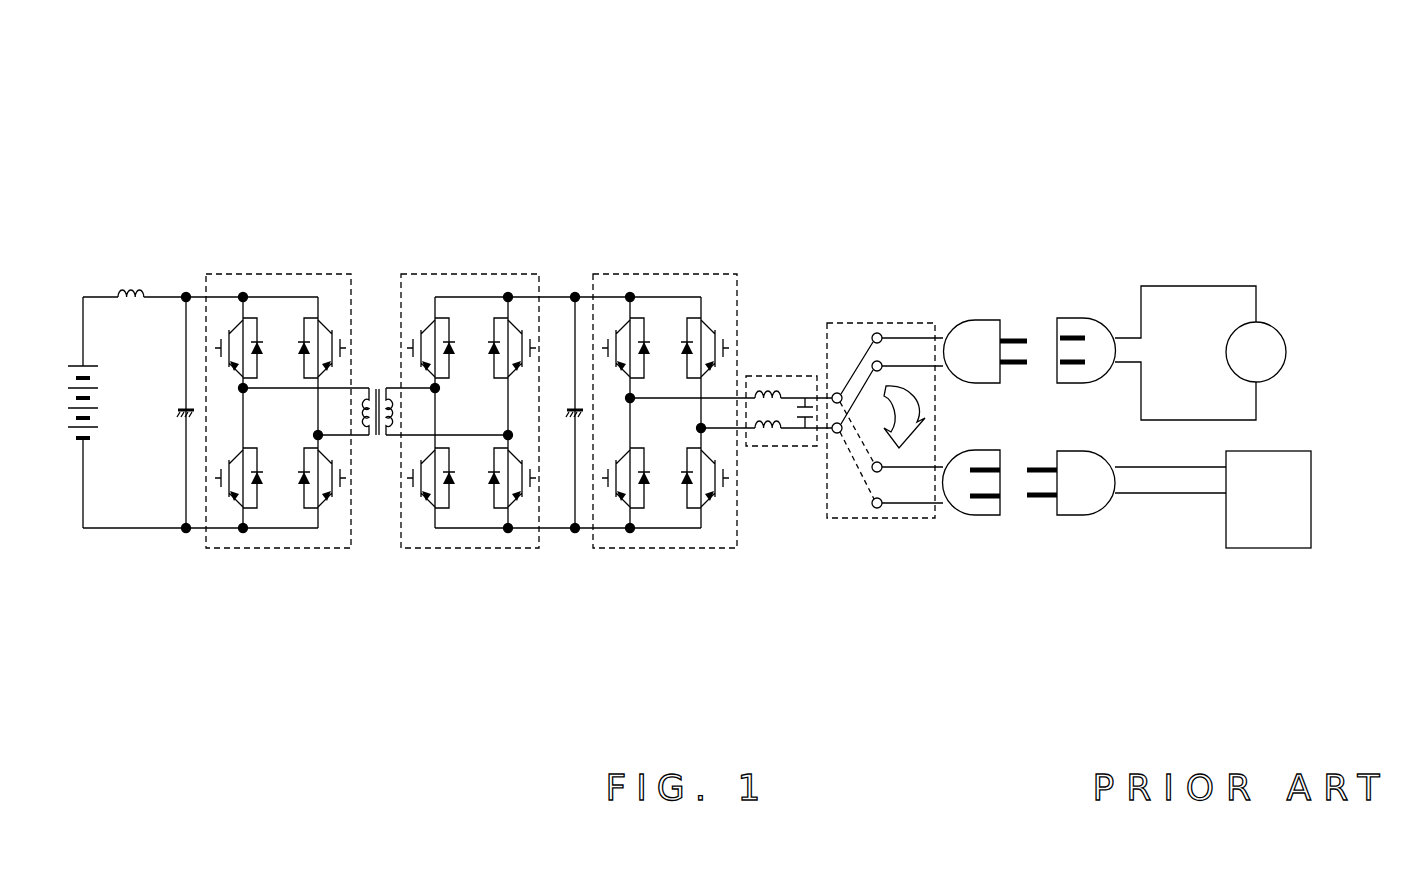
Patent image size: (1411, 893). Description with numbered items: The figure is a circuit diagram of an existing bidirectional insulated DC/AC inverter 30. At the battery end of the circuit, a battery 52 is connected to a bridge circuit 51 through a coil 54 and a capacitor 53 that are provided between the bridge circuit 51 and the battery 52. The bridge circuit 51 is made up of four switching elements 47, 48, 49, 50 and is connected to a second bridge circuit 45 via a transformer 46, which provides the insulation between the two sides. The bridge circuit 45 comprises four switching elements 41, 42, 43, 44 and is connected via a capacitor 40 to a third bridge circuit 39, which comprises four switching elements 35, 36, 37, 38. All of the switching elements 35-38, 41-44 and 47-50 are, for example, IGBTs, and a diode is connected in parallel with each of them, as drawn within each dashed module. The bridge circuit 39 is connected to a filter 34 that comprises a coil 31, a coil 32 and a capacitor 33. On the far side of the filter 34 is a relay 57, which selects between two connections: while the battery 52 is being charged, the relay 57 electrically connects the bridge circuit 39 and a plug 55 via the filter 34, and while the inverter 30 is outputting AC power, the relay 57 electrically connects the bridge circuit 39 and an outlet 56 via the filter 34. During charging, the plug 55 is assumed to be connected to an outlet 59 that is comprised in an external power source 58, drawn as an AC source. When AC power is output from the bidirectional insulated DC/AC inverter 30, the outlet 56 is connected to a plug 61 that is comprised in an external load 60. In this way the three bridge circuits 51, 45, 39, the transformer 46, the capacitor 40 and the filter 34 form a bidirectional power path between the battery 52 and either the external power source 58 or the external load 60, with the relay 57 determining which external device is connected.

The bidirectional insulated DC/AC inverter 30 is at (567, 128).
The coil 31 is at (764, 376).
The coil 32 is at (765, 446).
The capacitor 33 is at (808, 403).
The filter 34 is at (788, 446).
The switching element 35 is at (624, 326).
The switching element 36 is at (698, 326).
The switching element 37 is at (626, 498).
The switching element 38 is at (707, 498).
The bridge circuit 39 is at (668, 272).
The capacitor 40 is at (567, 405).
The switching element 41 is at (430, 326).
The switching element 42 is at (516, 326).
The switching element 43 is at (432, 498).
The switching element 44 is at (514, 498).
The bridge circuit 45 is at (466, 272).
The transformer 46 is at (381, 378).
The switching element 47 is at (238, 326).
The switching element 48 is at (326, 326).
The switching element 49 is at (240, 498).
The switching element 50 is at (322, 498).
The bridge circuit 51 is at (277, 272).
The battery 52 is at (76, 365).
The capacitor 53 is at (181, 405).
The coil 54 is at (133, 290).
The plug 55 is at (968, 320).
The outlet 56 is at (972, 517).
The relay 57 is at (876, 321).
The external power source 58 is at (1278, 328).
The outlet 59 is at (1086, 318).
The external load 60 is at (1270, 451).
The plug 61 is at (1086, 515).